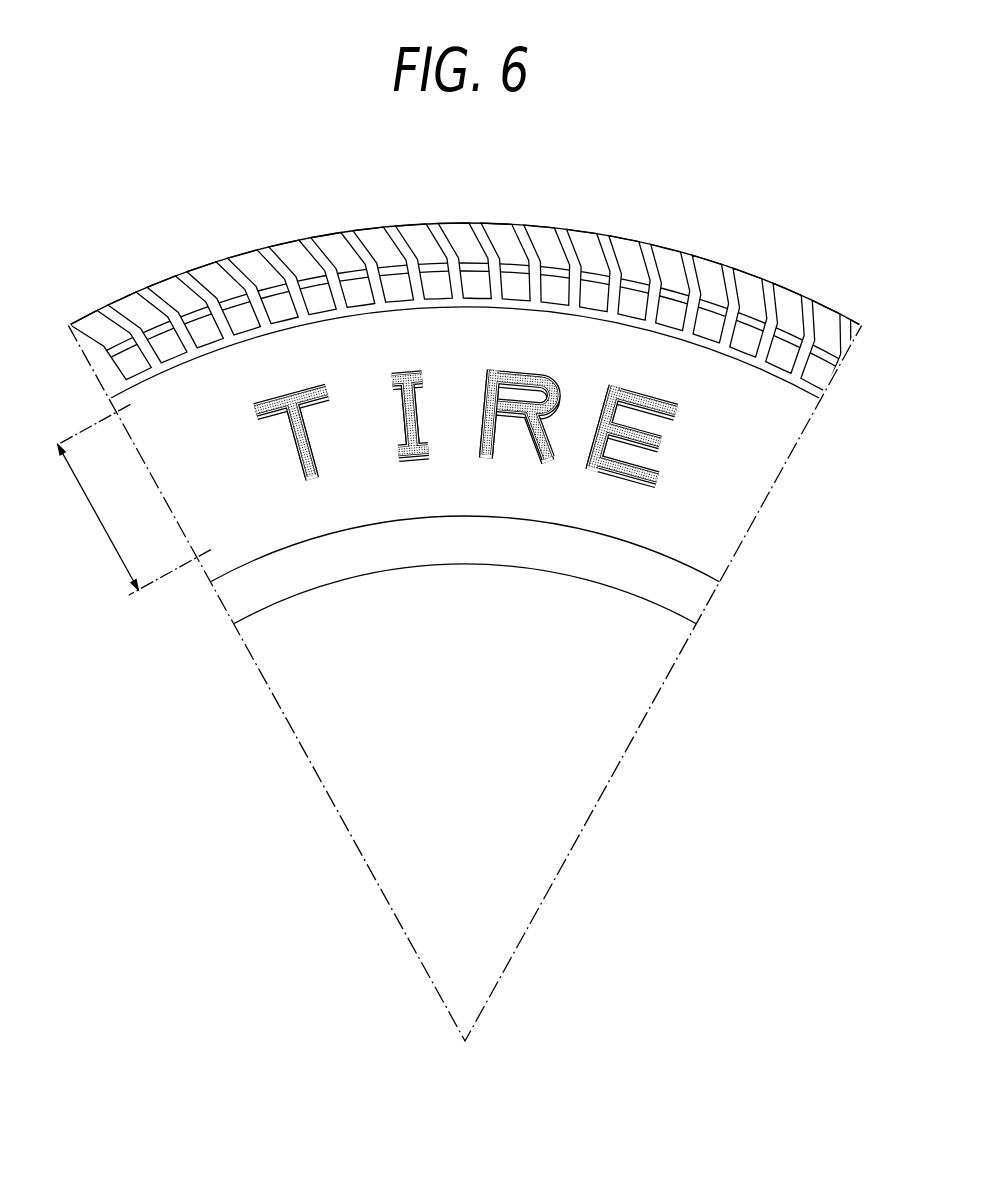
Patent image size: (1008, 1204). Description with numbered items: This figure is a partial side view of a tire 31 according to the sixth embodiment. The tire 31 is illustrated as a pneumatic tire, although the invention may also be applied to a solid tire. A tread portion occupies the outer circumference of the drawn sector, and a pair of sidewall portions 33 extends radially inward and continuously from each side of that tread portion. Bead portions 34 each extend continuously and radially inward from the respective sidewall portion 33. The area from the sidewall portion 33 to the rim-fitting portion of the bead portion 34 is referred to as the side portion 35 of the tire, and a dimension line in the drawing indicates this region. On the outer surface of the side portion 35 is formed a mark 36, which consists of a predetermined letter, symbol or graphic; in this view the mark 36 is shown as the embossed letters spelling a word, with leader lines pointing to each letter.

The tire 31 is at (472, 258).
The sidewall portion 33 is at (183, 463).
The bead portion 34 is at (302, 580).
The side portion 35 is at (134, 499).
The mark 36 is at (314, 474).